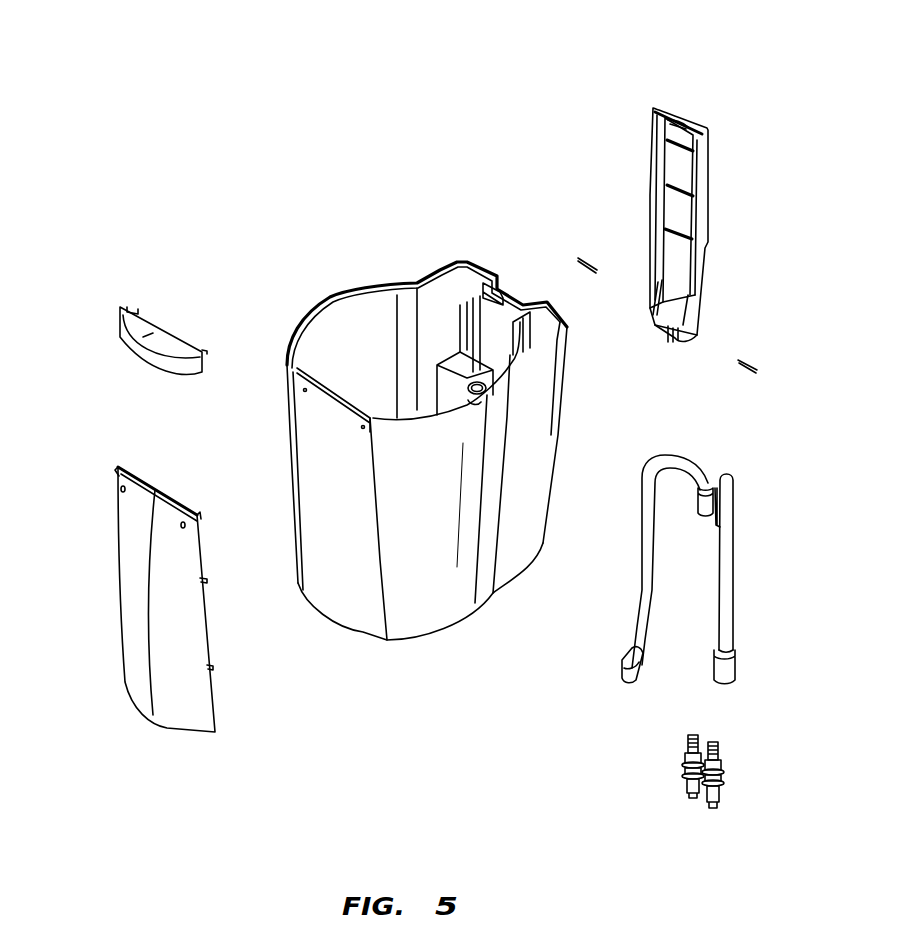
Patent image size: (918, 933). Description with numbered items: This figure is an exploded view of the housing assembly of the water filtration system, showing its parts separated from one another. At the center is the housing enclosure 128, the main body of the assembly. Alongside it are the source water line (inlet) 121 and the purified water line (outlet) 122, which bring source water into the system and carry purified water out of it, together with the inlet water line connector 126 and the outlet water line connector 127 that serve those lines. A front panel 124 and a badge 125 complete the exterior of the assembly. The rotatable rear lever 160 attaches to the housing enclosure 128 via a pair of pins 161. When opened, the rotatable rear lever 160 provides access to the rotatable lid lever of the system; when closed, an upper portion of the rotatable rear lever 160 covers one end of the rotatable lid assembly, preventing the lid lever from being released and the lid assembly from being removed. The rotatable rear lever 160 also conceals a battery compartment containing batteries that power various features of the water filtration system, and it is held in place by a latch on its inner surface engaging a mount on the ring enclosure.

The source water line (inlet) 121 is at (688, 457).
The purified water line (outlet) 122 is at (733, 550).
The front panel 124 is at (118, 578).
The badge 125 is at (120, 307).
The inlet water line connector 126 is at (725, 805).
The outlet water line connector 127 is at (722, 783).
The housing enclosure 128 is at (338, 623).
The rotatable rear lever 160 is at (708, 205).
The pins 161 is at (578, 258).